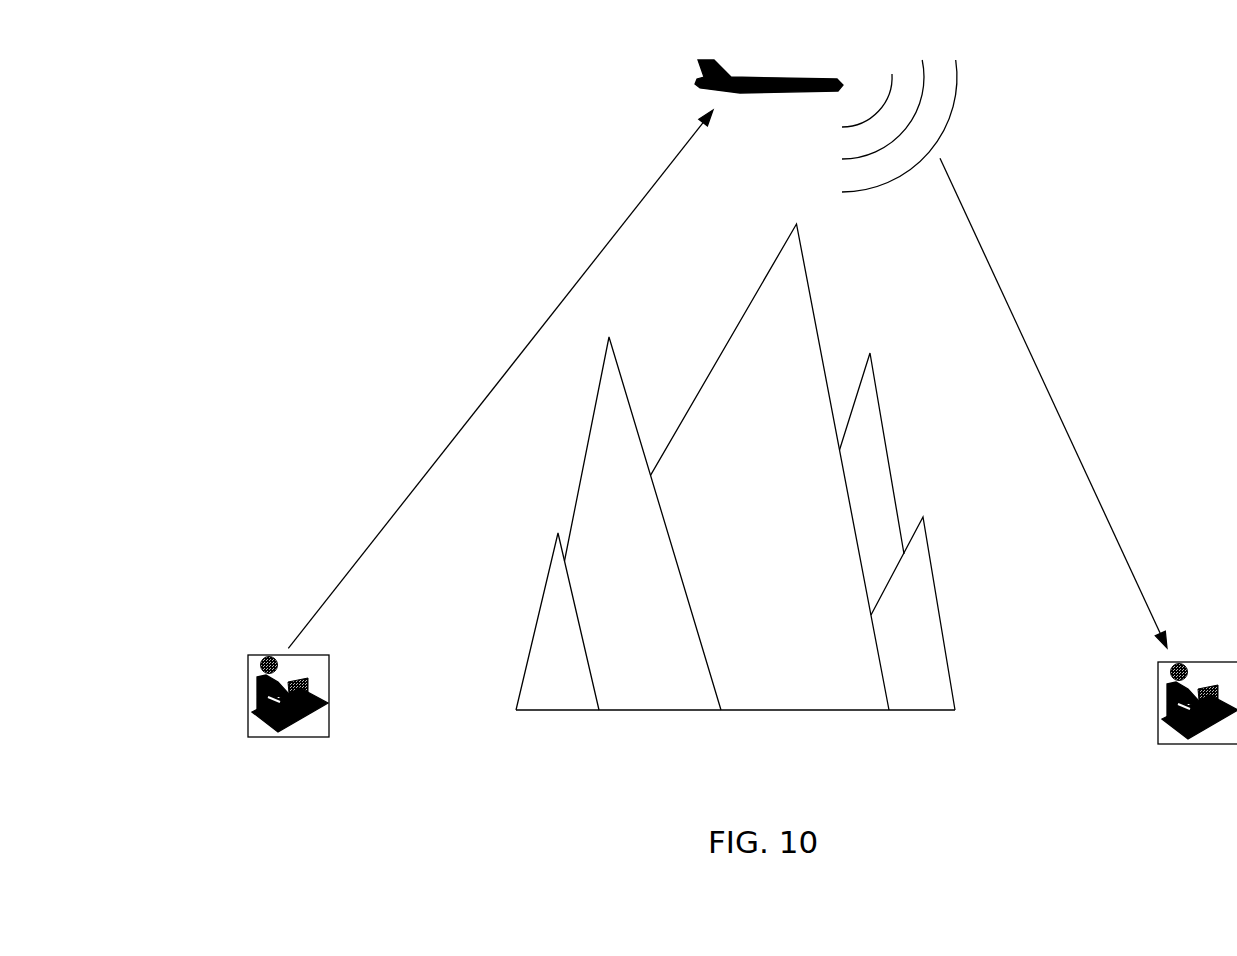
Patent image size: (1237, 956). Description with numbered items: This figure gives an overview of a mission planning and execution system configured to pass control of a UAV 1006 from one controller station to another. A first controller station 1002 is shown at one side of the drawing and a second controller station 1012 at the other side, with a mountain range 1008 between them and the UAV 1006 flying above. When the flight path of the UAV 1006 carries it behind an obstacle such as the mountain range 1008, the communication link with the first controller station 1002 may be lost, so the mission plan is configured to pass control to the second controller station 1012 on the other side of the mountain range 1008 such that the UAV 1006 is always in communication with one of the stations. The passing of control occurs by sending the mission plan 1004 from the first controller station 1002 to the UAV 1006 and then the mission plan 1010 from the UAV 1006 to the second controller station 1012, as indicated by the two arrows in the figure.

The first controller station 1002 is at (248, 697).
The mission plan 1004 is at (455, 434).
The UAV 1006 is at (697, 70).
The mountain range 1008 is at (744, 311).
The mission plan 1010 is at (982, 256).
The second controller station 1012 is at (1158, 700).